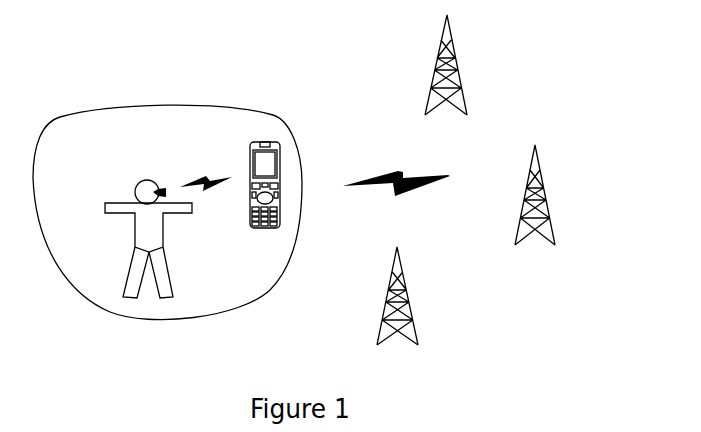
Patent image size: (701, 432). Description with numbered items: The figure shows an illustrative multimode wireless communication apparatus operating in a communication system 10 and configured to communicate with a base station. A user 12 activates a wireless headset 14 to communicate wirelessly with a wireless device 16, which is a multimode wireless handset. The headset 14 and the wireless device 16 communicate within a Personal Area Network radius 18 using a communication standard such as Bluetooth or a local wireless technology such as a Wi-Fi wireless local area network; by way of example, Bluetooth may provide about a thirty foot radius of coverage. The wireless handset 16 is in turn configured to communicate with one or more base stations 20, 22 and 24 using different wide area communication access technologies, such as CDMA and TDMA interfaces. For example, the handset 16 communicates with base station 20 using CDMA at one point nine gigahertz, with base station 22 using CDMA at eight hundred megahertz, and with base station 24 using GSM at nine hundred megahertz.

The communication system 10 is at (221, 74).
The user 12 is at (113, 202).
The wireless headset 14 is at (164, 188).
The wireless device 16 is at (250, 165).
The Personal Area Network radius 18 is at (273, 115).
The base station 20 is at (407, 293).
The base station 22 is at (545, 193).
The base station 24 is at (455, 60).